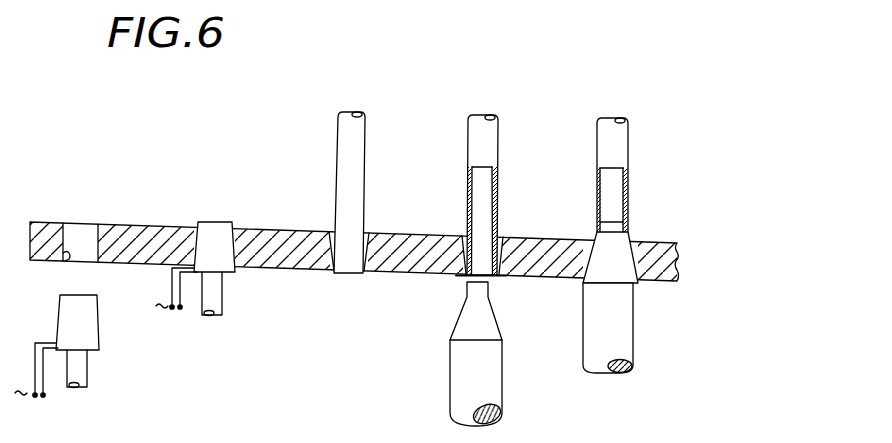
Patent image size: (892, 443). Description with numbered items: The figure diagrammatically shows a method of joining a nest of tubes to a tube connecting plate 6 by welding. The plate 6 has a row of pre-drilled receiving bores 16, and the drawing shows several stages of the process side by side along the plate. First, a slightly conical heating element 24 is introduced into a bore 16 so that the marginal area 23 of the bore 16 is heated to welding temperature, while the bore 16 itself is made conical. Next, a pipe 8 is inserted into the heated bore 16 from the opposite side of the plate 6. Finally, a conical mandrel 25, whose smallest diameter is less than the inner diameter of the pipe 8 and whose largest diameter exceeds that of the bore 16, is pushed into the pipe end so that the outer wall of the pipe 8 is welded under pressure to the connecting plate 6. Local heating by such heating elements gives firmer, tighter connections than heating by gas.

The tube connecting plate 6 is at (147, 230).
The marginal area 23 is at (250, 232).
The pipe 8 is at (342, 160).
The receiving bore 16 is at (66, 252).
The heating element 24 is at (222, 257).
The conical mandrel 25 is at (474, 320).